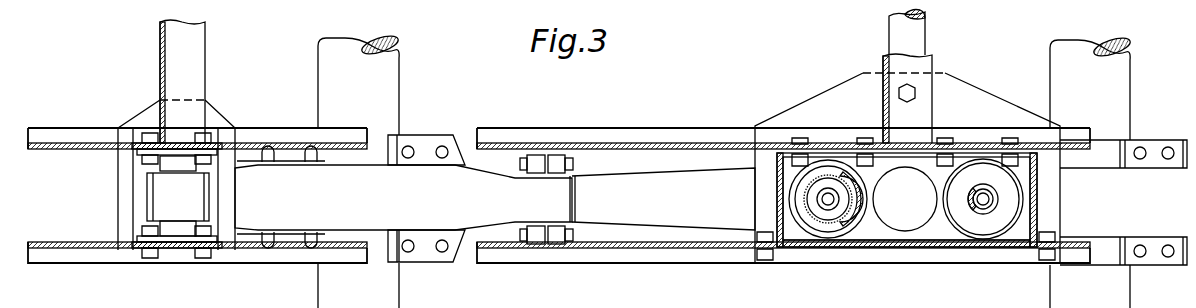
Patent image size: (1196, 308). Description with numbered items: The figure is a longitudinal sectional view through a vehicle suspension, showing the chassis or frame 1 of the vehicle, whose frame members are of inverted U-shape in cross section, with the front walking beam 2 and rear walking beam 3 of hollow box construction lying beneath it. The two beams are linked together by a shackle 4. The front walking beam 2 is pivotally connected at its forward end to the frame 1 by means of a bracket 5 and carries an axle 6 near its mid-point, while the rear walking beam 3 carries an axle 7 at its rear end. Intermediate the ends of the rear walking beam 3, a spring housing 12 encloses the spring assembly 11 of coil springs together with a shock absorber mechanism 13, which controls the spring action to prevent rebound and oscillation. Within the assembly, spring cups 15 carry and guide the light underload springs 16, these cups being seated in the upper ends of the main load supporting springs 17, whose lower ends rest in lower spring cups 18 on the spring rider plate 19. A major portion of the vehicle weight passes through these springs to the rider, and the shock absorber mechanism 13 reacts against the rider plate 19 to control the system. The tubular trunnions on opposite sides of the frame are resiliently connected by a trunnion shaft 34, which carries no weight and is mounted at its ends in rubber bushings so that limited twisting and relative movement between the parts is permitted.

The chassis or frame 1 is at (596, 148).
The front walking beam 2 is at (360, 211).
The rear walking beam 3 is at (676, 208).
The shackle 4 is at (533, 237).
The bracket 5 is at (140, 141).
The axle 6 is at (386, 63).
The axle 7 is at (1118, 62).
The spring assembly 11 is at (838, 241).
The spring housing 12 is at (1038, 218).
The shock absorber mechanism 13 is at (916, 210).
The spring cups 15 is at (975, 228).
The light underload springs 16 is at (822, 212).
The main load supporting springs 17 is at (797, 195).
The lower spring cups 18 is at (952, 232).
The spring rider plate 19 is at (880, 240).
The trunnion shaft 34 is at (893, 32).